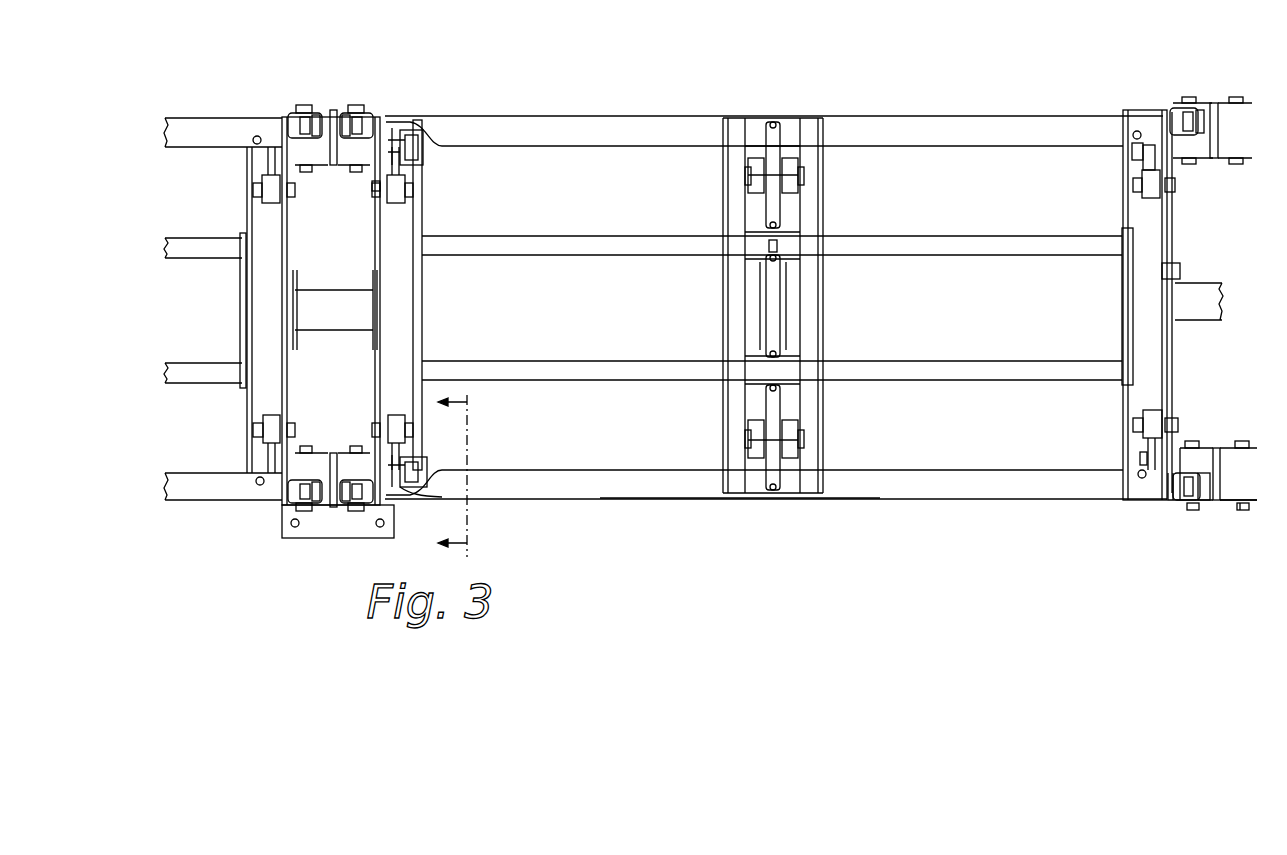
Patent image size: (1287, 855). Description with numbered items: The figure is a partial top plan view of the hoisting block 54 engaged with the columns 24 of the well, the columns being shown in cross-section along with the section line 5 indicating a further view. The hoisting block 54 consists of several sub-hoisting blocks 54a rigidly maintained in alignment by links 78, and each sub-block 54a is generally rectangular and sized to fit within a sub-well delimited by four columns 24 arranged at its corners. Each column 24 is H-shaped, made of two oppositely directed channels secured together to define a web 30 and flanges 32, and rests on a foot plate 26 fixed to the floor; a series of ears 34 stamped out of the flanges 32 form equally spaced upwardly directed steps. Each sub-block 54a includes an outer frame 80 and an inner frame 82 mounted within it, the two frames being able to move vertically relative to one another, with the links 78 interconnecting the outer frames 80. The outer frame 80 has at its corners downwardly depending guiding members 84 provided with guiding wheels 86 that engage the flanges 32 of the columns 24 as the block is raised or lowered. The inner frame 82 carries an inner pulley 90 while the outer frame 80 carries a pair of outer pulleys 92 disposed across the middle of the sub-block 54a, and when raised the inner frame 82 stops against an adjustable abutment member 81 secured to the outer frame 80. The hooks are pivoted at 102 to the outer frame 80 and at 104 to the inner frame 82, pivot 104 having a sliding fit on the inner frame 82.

The column 24 is at (328, 99).
The foot plate 26 is at (355, 535).
The web 30 is at (1222, 470).
The flanges 32 is at (1242, 506).
The ears 34 is at (364, 104).
The section line 5- 5 is at (467, 474).
The hoisting block 54 is at (596, 515).
The sub-hoisting block 54a is at (197, 500).
The links 78 is at (330, 302).
The outer frame 80 is at (954, 130).
The adjustable abutment member 81 is at (1137, 474).
The inner frame 82 is at (420, 325).
The guiding members 84 is at (1175, 500).
The guiding wheels 86 is at (1207, 490).
The inner pulley 90 is at (776, 307).
The outer pulleys 92 is at (778, 212).
The pivot 102 is at (370, 190).
The pivot 104 is at (410, 148).